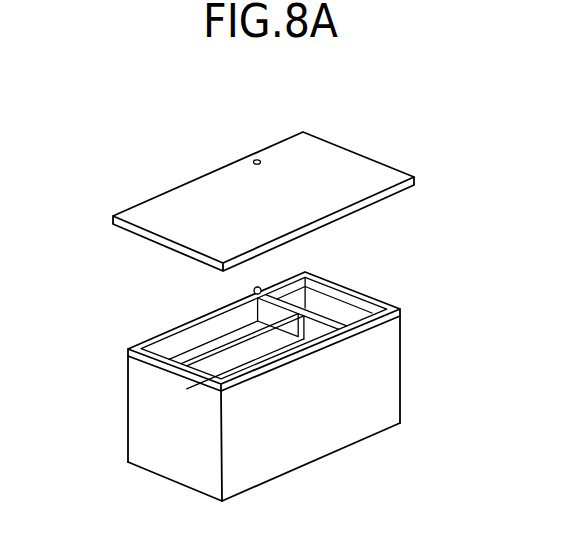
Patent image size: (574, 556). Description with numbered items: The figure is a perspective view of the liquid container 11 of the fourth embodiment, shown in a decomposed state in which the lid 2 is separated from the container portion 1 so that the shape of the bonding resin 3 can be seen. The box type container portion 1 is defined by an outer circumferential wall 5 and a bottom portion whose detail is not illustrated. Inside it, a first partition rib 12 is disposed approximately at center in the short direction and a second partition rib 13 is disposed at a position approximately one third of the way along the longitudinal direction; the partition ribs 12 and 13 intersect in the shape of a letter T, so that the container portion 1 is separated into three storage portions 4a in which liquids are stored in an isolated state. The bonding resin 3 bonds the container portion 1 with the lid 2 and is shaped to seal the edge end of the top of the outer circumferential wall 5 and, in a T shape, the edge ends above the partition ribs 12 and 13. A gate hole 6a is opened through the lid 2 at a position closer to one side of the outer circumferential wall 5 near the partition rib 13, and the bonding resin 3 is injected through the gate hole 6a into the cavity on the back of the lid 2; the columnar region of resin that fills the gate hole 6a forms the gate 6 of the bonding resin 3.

The liquid container 11 is at (83, 177).
The lid 2 is at (371, 172).
The gate hole 6a is at (256, 158).
The container portion 1 is at (143, 470).
The outer circumferential wall 5 is at (127, 376).
The bonding resin 3 is at (397, 303).
The storage portion 4a is at (172, 347).
The second partition rib 13 is at (258, 318).
The first partition rib 12 is at (230, 360).
The gate 6 is at (262, 288).